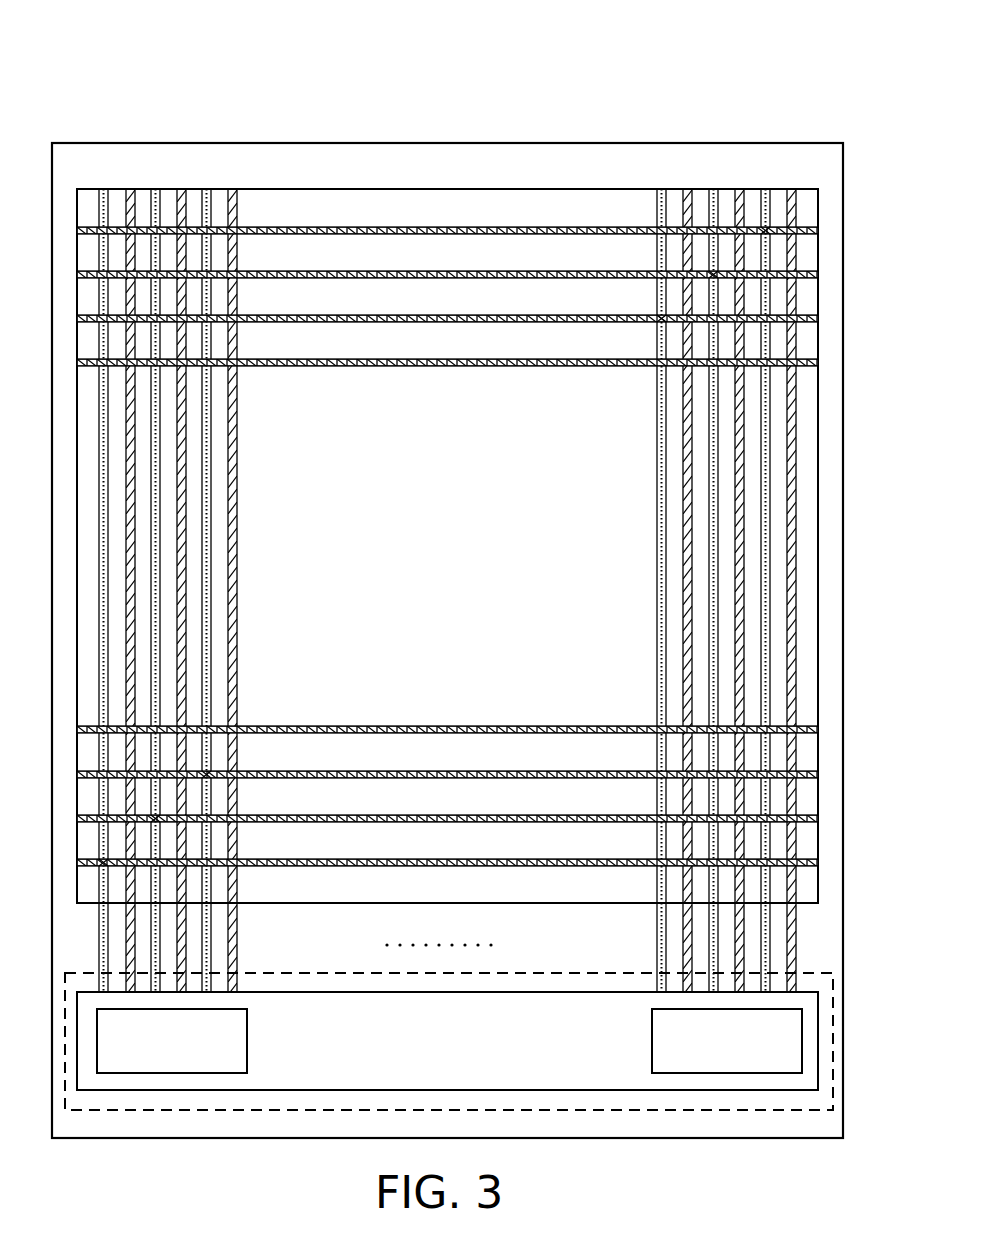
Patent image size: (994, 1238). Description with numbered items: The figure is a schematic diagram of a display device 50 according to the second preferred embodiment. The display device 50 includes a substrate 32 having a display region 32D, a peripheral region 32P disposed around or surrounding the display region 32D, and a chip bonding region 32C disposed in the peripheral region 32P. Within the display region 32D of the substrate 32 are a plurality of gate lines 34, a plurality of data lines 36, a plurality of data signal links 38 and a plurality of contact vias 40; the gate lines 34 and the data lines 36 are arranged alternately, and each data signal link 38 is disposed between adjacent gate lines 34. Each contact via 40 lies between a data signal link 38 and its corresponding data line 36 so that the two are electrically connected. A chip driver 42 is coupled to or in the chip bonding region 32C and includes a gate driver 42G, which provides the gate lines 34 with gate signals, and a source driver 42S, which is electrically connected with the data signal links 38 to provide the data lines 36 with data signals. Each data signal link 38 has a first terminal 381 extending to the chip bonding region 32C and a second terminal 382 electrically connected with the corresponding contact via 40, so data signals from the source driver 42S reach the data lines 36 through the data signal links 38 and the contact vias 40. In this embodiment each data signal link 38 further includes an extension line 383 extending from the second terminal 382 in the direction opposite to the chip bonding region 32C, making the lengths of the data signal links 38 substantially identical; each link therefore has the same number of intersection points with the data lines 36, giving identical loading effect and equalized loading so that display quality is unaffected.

The display device 50 is at (706, 100).
The substrate 32 is at (843, 258).
The display region 32D is at (287, 208).
The peripheral region 32P is at (828, 383).
The chip bonding region 32C is at (835, 1005).
The gate lines 34 is at (238, 552).
The data lines 36 is at (265, 364).
The data signal links 38 is at (657, 549).
The first terminal 381 is at (655, 988).
The second terminal 382 is at (655, 330).
The extension line 383 is at (655, 221).
The contact vias 40 is at (660, 316).
The chip driver 42 is at (457, 1054).
The gate driver 42G is at (193, 1054).
The source driver 42S is at (747, 1054).